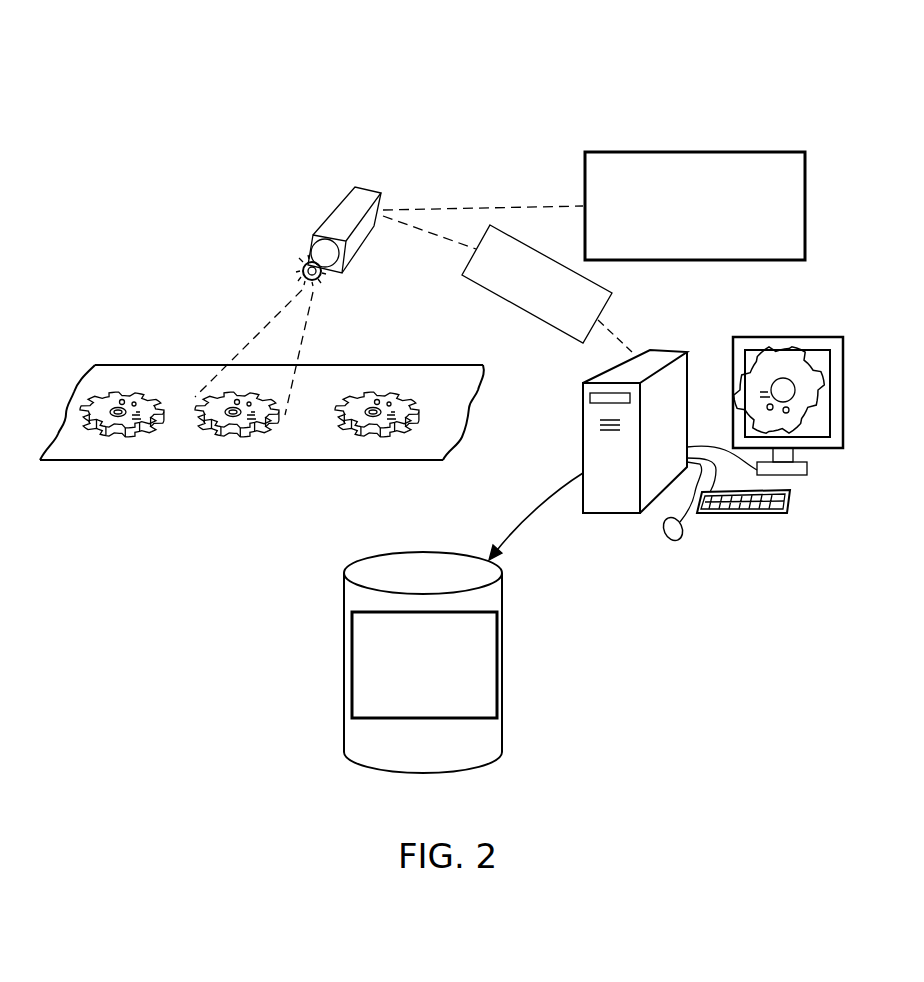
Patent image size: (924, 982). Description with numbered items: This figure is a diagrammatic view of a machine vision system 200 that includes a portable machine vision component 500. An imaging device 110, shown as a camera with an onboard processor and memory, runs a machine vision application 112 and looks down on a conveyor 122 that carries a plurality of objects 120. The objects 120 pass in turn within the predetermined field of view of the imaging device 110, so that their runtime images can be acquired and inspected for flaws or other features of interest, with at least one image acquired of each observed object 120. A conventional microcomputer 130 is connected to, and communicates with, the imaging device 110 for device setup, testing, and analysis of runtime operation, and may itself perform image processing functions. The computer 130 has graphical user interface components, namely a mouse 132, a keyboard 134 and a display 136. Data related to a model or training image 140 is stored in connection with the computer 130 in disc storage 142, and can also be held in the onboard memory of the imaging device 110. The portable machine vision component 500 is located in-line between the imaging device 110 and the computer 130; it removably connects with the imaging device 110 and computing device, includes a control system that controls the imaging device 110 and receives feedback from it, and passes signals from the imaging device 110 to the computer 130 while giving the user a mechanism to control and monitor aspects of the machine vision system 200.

The machine vision system 200 is at (598, 112).
The imaging device 110 is at (330, 212).
The machine vision application 112 is at (649, 152).
The object 120 is at (128, 392).
The conveyor 122 is at (158, 461).
The computer 130 is at (668, 350).
The mouse 132 is at (682, 530).
The keyboard 134 is at (760, 517).
The display 136 is at (843, 393).
The training image 140 is at (490, 652).
The disc storage 142 is at (502, 598).
The machine vision component 500 is at (537, 284).